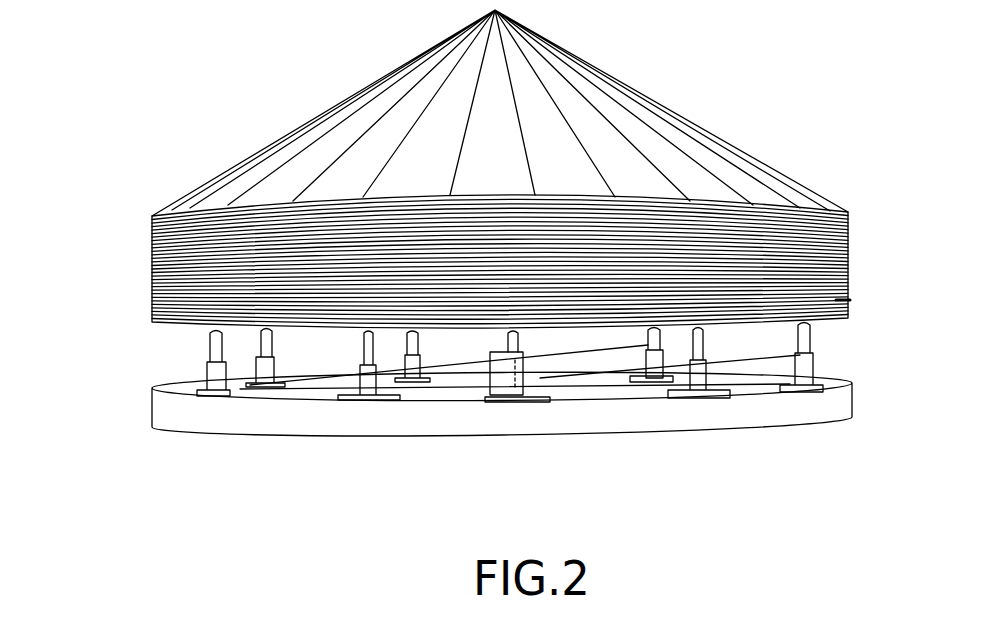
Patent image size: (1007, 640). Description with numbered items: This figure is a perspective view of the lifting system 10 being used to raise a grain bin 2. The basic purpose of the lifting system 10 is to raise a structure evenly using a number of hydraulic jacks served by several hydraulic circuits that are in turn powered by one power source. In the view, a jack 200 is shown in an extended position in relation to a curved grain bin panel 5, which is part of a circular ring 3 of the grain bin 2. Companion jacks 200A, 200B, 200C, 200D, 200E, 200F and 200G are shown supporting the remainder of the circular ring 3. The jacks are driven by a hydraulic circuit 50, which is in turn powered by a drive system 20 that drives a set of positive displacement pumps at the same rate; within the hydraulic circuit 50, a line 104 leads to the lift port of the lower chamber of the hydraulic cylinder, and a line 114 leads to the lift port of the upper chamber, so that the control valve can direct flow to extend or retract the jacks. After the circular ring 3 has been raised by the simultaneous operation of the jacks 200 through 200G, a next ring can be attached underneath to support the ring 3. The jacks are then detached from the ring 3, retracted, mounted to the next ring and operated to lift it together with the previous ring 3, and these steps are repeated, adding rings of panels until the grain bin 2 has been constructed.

The grain bin 2 is at (693, 121).
The circular ring 3 is at (849, 267).
The curved grain bin panel 5 is at (850, 300).
The lifting system 10 is at (106, 347).
The drive system 20 is at (527, 352).
The hydraulic circuit 50 is at (458, 398).
The line 104 is at (770, 391).
The line 114 is at (724, 373).
The jack 200 is at (812, 357).
The jack 200A is at (727, 400).
The jack 200B is at (537, 400).
The jack 200C is at (363, 400).
The jack 200D is at (168, 376).
The jack 200E is at (258, 341).
The jack 200F is at (418, 363).
The jack 200G is at (649, 329).